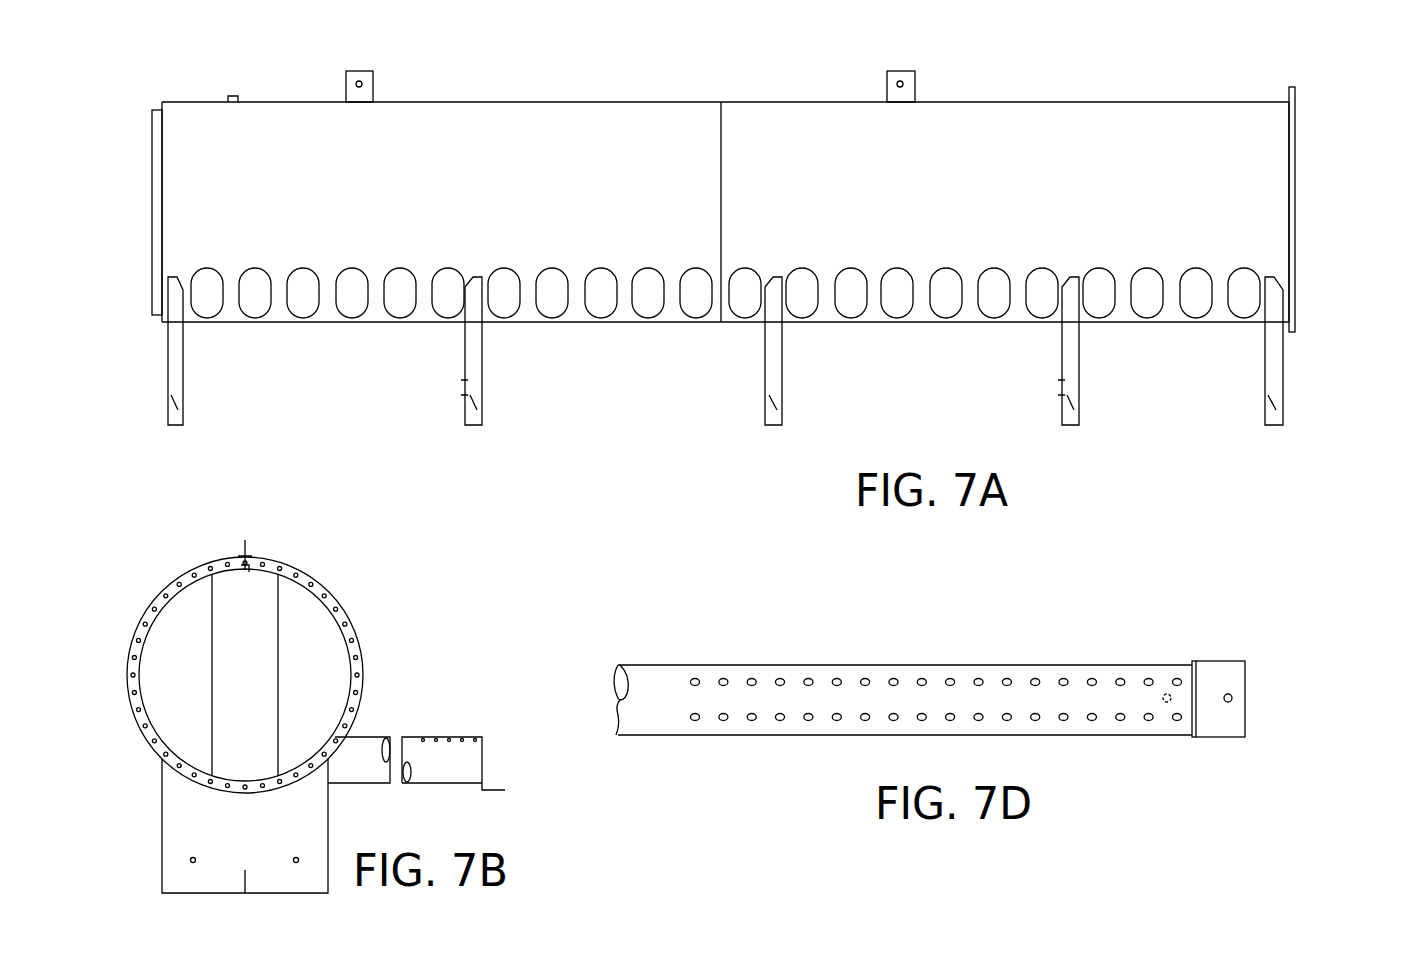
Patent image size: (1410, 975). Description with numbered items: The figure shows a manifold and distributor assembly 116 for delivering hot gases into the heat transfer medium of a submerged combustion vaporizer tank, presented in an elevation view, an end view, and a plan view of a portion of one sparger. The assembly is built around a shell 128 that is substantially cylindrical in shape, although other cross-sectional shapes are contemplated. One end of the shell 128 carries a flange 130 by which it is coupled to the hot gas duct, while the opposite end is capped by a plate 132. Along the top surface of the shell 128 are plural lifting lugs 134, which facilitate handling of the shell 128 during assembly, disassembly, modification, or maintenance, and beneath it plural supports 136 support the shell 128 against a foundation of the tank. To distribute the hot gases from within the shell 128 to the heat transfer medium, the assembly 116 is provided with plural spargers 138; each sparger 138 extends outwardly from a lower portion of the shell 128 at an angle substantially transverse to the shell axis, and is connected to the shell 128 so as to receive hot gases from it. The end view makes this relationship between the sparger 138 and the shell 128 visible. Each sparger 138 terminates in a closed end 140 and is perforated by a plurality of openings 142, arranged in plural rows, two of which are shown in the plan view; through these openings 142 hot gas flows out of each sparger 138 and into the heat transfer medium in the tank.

In FIG. 7A, the manifold and distributor assembly 116 is at (130, 430).
In FIG. 7B, the manifold and distributor assembly 116 is at (355, 545).
In FIG. 7A, the shell 128 is at (522, 98).
In FIG. 7B, the shell 128 is at (147, 628).
In FIG. 7A, the flange 130 is at (1295, 206).
In FIG. 7B, the flange 130 is at (315, 578).
In FIG. 7A, the plate 132 is at (160, 228).
In FIG. 7B, the plate 132 is at (180, 652).
In FIG. 7A, the lifting lugs 134 is at (912, 83).
In FIG. 7A, the supports 136 is at (1068, 358).
In FIG. 7B, the supports 136 is at (197, 815).
In FIG. 7A, the sparger 138 is at (262, 300).
In FIG. 7B, the sparger 138 is at (447, 765).
In FIG. 7D, the sparger 138 is at (755, 665).
In FIG. 7D, the closed end 140 is at (1197, 695).
In FIG. 7D, the openings 142 is at (893, 682).